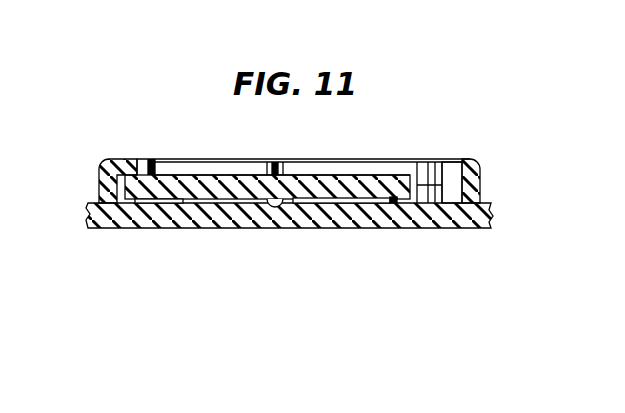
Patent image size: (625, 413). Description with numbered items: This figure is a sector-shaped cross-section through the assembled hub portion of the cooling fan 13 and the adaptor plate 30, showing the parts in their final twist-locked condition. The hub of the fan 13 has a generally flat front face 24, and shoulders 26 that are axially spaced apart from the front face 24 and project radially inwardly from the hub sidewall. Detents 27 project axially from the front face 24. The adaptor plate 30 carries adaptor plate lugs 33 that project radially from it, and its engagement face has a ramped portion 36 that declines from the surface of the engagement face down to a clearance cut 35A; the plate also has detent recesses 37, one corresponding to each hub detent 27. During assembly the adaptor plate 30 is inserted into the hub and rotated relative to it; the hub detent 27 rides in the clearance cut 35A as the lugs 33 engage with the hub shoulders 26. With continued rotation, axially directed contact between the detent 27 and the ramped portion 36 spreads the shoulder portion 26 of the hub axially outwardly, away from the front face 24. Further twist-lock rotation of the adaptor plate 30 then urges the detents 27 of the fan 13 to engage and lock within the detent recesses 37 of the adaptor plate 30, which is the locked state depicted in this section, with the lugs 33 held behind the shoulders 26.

The cooling fan 13 is at (114, 146).
The front face 24 is at (178, 195).
The shoulders 26 is at (150, 159).
The detents 27 is at (393, 204).
The adaptor plate 30 is at (345, 152).
The adaptor plate lugs 33 is at (136, 199).
The clearance cut 35A is at (343, 200).
The ramped portion 36 is at (395, 205).
The detent recesses 37 is at (393, 202).